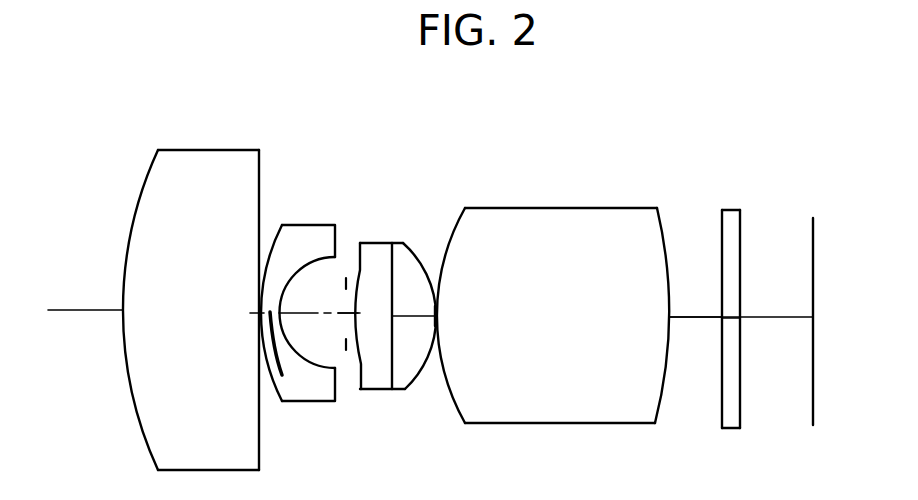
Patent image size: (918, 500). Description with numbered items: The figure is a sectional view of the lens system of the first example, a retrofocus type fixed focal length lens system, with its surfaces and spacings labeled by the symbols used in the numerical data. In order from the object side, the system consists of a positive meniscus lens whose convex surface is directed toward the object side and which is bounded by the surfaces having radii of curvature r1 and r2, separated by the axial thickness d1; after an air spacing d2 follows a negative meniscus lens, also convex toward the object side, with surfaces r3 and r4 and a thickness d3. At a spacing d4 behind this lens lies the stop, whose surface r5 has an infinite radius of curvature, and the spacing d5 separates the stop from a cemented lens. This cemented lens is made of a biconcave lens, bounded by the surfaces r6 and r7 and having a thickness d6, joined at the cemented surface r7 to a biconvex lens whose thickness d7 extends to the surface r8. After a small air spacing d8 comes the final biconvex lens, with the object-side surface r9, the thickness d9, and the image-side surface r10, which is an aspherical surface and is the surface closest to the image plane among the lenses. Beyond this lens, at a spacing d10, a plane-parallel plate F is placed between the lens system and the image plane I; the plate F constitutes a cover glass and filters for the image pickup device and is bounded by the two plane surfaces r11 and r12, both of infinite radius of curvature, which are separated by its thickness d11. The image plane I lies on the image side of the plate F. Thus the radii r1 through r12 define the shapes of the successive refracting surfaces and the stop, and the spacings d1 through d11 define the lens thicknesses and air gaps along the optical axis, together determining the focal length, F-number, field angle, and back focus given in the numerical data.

The first lens surface radius of curvature r1 is at (145, 183).
The second lens surface radius of curvature r2 is at (259, 232).
The third lens surface radius of curvature r3 is at (273, 240).
The fourth lens surface radius of curvature r4 is at (306, 258).
The stop surface r5 is at (344, 300).
The sixth lens surface radius of curvature r6 is at (362, 295).
The seventh lens surface radius of curvature r7 is at (380, 388).
The eighth lens surface radius of curvature r8 is at (411, 264).
The ninth lens surface radius of curvature r9 is at (454, 232).
The tenth lens surface radius of curvature r10 is at (664, 240).
The eleventh surface radius of curvature r11 is at (722, 237).
The twelfth surface radius of curvature r12 is at (741, 238).
The first surface spacing d1 is at (208, 310).
The second surface spacing d2 is at (261, 316).
The third surface spacing d3 is at (302, 317).
The fourth surface spacing d4 is at (319, 334).
The fifth surface spacing d5 is at (355, 320).
The sixth surface spacing d6 is at (363, 272).
The seventh surface spacing d7 is at (412, 322).
The eighth surface spacing d8 is at (435, 325).
The ninth surface spacing d9 is at (561, 315).
The tenth surface spacing d10 is at (696, 339).
The eleventh surface spacing d11 is at (731, 321).
The plane-parallel plate F is at (730, 212).
The image plane I is at (813, 291).